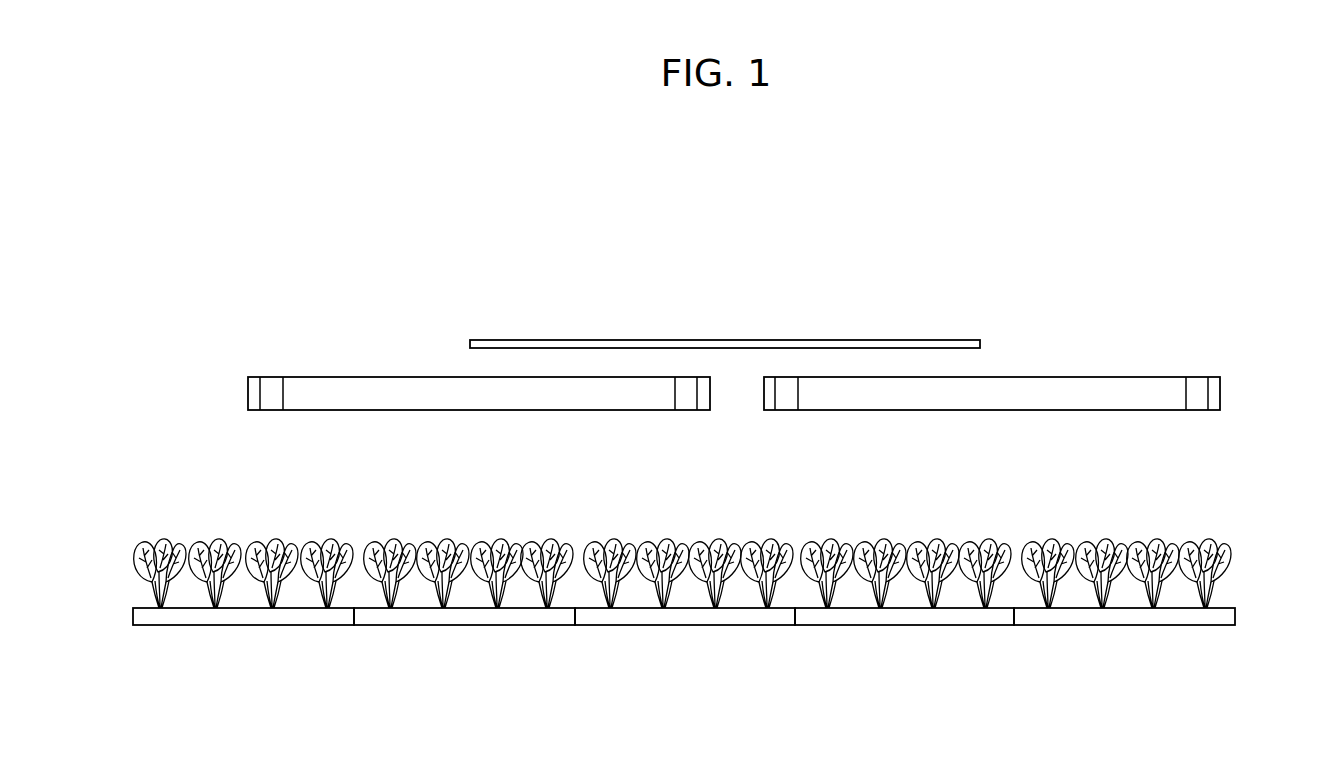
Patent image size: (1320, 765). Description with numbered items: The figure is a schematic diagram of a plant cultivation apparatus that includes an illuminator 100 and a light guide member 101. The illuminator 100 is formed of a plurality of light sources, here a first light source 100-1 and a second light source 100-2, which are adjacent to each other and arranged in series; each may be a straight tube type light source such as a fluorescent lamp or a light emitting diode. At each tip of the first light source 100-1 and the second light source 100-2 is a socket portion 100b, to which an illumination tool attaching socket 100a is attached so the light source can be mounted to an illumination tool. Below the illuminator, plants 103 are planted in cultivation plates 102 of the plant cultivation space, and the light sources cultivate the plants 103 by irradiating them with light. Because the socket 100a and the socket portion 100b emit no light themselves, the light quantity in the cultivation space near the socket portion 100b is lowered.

The illuminator 100 is at (228, 384).
The first light source 100-1 is at (418, 378).
The second light source 100-2 is at (1137, 374).
The illumination tool attaching socket 100a is at (255, 408).
The socket portion 100b is at (272, 408).
The light guide member 101 is at (928, 339).
The cultivation plate 102 is at (222, 618).
The plant 103 is at (343, 588).